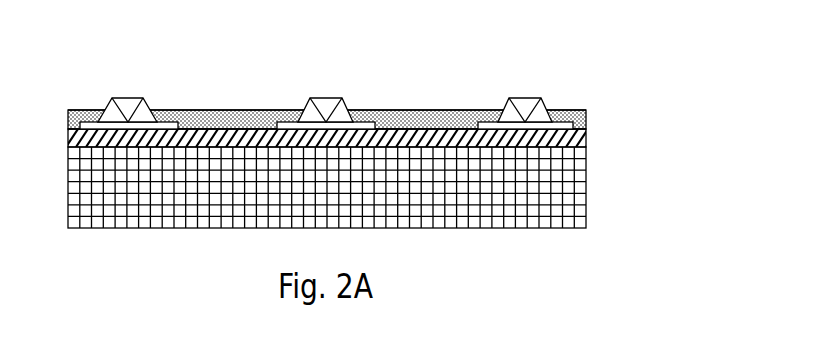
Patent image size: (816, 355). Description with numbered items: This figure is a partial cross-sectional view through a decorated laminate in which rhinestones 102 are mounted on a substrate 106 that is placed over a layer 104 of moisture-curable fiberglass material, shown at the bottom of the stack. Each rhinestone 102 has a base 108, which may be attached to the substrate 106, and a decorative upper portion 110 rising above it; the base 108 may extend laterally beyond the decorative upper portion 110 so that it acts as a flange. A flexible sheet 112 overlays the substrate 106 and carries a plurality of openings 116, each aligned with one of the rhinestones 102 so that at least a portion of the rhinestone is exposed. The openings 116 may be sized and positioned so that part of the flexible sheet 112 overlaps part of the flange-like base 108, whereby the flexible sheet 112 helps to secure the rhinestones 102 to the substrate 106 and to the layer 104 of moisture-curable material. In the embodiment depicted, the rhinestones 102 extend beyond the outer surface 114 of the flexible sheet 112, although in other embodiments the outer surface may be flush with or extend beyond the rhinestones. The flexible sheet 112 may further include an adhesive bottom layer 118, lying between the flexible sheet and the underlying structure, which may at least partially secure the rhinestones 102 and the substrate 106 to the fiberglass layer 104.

The rhinestone 102 is at (553, 90).
The layer of moisture-curable material 104 is at (573, 172).
The substrate 106 is at (585, 142).
The base 108 is at (158, 122).
The decorative upper portion 110 is at (104, 110).
The flexible sheet 112 is at (454, 115).
The outer surface of the flexible sheet 114 is at (387, 110).
The opening 116 is at (322, 98).
The adhesive bottom layer 118 is at (250, 128).